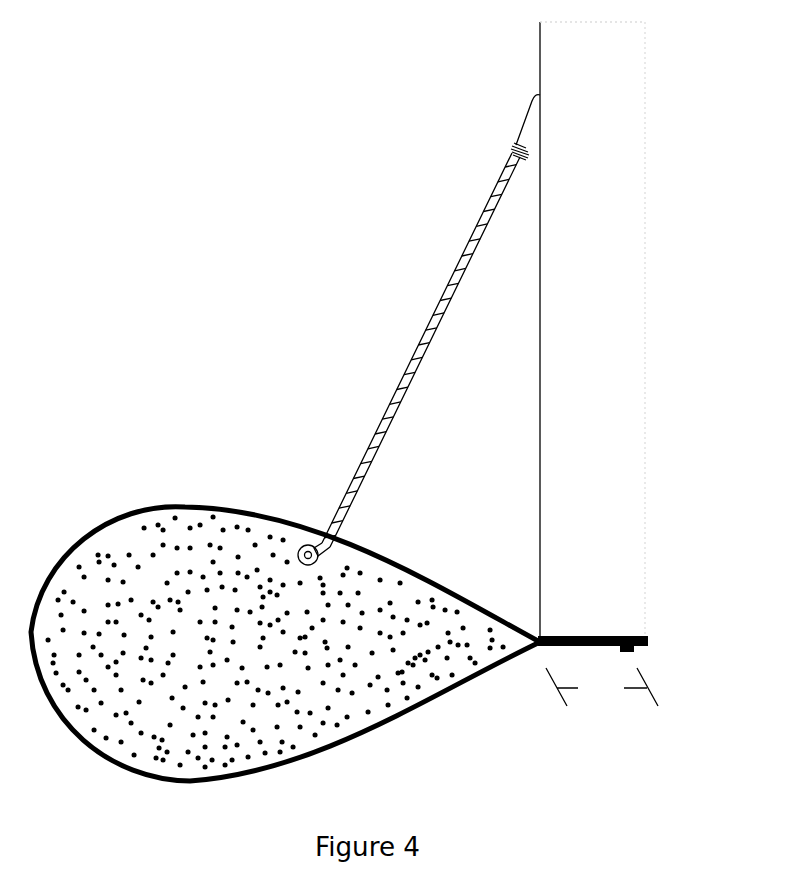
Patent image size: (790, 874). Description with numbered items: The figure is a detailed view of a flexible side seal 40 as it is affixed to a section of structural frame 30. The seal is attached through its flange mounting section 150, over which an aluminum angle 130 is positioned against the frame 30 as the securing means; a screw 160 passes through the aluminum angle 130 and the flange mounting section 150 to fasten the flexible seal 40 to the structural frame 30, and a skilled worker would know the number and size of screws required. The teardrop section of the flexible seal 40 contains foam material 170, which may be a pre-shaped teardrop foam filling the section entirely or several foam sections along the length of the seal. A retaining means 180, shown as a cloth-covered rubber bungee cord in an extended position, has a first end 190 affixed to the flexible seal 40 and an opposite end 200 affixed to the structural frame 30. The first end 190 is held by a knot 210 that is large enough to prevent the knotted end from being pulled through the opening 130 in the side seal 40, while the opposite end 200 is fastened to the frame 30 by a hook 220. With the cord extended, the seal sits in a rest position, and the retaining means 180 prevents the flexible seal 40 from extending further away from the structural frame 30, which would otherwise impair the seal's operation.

The structural frame 30 is at (603, 409).
The flexible side seal 40 is at (158, 507).
The aluminum angle 130 is at (648, 640).
The flange mounting section 150 is at (602, 687).
The screw 160 is at (634, 651).
The foam material 170 is at (183, 600).
The retaining means 180 is at (405, 385).
The first end 190 is at (320, 556).
The opposite end 200 is at (507, 182).
The knot 210 is at (307, 538).
The hook 220 is at (521, 128).